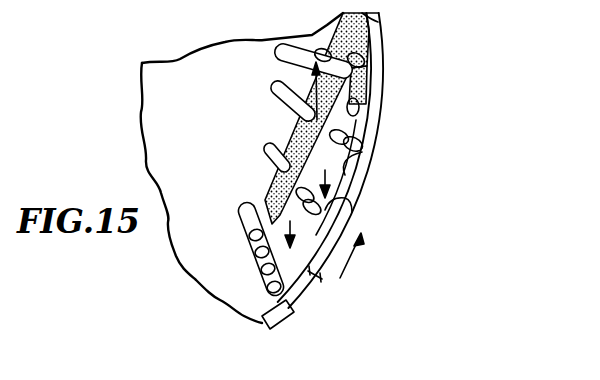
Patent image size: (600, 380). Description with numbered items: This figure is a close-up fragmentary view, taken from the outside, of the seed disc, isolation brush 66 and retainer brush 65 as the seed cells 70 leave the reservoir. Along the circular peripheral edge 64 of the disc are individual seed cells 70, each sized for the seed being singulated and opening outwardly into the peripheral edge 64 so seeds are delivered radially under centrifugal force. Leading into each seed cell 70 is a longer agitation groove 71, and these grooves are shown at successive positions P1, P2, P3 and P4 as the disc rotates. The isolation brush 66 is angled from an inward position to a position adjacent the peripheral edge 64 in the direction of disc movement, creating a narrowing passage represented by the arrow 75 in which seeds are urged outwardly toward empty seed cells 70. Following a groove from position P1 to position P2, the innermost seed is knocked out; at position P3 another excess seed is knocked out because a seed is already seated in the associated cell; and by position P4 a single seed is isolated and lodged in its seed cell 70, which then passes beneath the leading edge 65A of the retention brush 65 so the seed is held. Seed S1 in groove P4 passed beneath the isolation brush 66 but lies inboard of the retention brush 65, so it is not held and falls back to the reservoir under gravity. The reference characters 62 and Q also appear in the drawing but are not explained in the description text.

The seed S1 is at (322, 44).
The retainer brush 65 is at (372, 36).
The agitation groove position P4 is at (275, 51).
The agitation groove position P3 is at (272, 90).
The isolation brush 66 is at (292, 138).
The agitation groove position P2 is at (266, 149).
The leading edge of retention brush 65A is at (356, 118).
The arrow representing narrowing passage 75 is at (366, 179).
The seed cell 70 is at (291, 320).
The agitation groove position P1 is at (244, 206).
The longer agitation groove 71 is at (248, 231).
The outer rim 62 is at (350, 261).
The peripheral edge 64 is at (321, 285).
The direction of motion Q is at (306, 200).